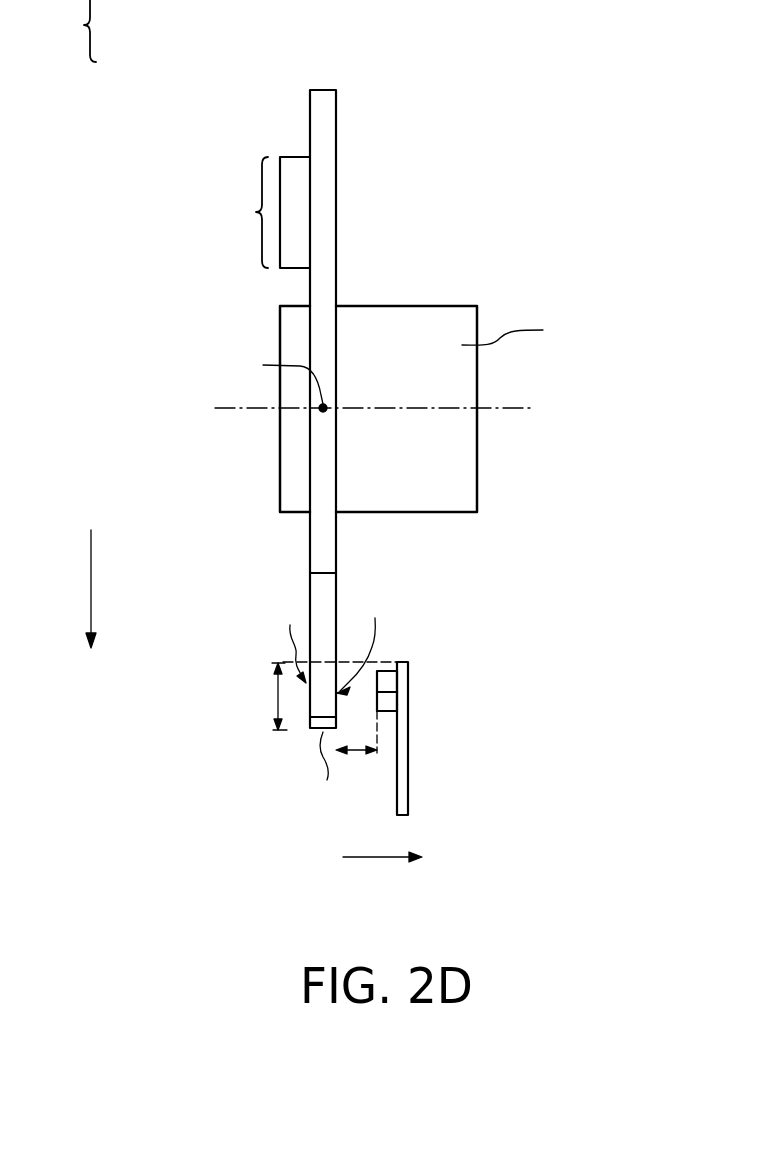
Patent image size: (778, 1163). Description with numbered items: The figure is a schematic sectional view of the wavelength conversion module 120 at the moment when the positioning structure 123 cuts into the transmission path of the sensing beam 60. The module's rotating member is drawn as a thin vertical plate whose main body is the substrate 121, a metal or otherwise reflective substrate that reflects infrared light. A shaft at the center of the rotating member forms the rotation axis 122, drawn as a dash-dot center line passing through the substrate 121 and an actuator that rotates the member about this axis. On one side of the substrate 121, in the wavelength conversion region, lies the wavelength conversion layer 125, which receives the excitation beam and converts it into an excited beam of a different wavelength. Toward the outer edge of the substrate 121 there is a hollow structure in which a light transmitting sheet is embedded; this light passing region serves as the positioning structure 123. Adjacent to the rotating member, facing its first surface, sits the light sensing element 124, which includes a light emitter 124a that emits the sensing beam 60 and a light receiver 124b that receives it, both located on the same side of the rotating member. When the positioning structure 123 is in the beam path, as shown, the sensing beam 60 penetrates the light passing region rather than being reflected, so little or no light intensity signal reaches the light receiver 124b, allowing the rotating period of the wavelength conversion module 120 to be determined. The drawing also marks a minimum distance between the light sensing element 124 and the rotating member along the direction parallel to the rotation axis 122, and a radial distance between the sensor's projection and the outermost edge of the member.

The wavelength conversion module 120 is at (346, 438).
The substrate 121 is at (325, 214).
The rotation axis 122 is at (525, 410).
The positioning structure 123 is at (249, 573).
The light sensing element 124 is at (402, 765).
The light emitter 124a is at (390, 680).
The light receiver 124b is at (390, 698).
The wavelength conversion layer 125 is at (295, 165).
The sensing beam 60 is at (363, 638).